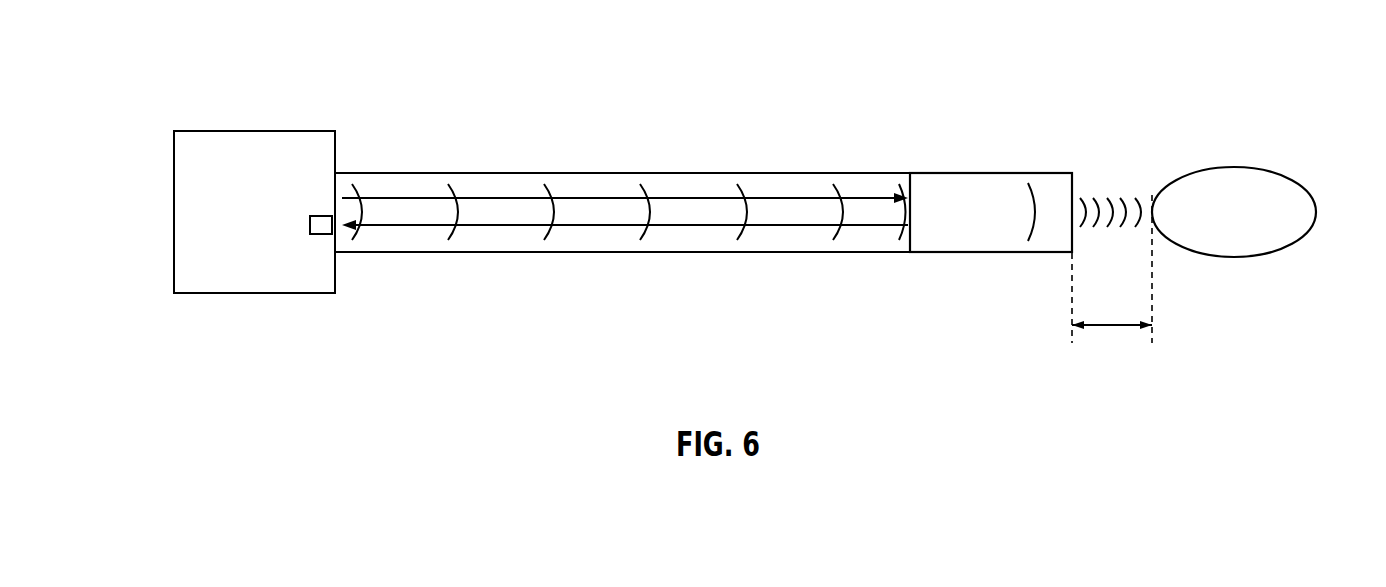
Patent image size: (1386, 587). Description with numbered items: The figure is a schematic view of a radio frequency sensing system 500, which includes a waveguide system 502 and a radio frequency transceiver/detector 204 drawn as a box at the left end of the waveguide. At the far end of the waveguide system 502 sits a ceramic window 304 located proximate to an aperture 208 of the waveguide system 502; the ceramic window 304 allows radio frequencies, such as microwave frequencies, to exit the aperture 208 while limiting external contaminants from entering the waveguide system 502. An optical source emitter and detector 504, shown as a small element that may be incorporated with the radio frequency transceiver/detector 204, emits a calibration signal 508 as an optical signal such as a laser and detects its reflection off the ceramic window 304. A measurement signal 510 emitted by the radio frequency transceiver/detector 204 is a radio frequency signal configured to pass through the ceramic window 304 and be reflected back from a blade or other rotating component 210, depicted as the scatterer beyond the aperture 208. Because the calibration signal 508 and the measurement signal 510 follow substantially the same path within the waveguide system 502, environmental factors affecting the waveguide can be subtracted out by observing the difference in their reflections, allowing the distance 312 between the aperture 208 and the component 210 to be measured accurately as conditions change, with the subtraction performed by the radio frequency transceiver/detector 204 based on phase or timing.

The radio frequency sensing system 500 is at (168, 64).
The radio frequency transceiver/detector 204 is at (173, 213).
The waveguide system 502 is at (470, 173).
The optical source emitter and detector 504 is at (322, 234).
The calibration signal 508 is at (465, 226).
The measurement signal 510 is at (744, 196).
The ceramic window 304 is at (998, 165).
The aperture 208 is at (1073, 185).
The rotating component 210 is at (1281, 175).
The distance 312 is at (1107, 327).